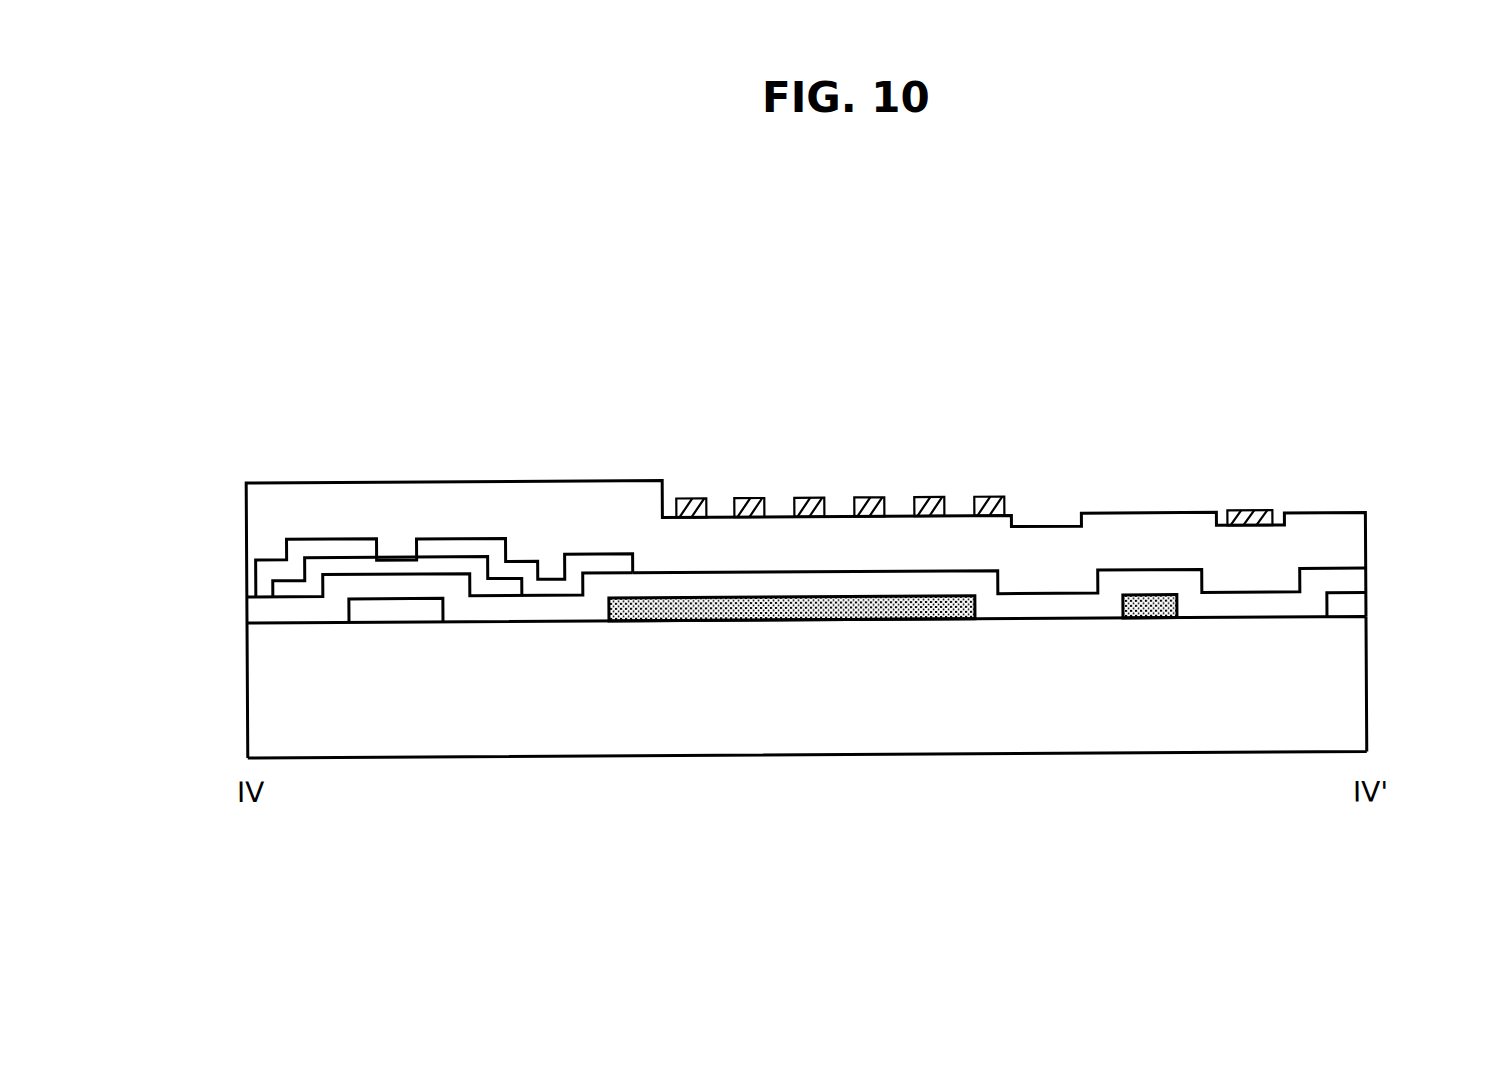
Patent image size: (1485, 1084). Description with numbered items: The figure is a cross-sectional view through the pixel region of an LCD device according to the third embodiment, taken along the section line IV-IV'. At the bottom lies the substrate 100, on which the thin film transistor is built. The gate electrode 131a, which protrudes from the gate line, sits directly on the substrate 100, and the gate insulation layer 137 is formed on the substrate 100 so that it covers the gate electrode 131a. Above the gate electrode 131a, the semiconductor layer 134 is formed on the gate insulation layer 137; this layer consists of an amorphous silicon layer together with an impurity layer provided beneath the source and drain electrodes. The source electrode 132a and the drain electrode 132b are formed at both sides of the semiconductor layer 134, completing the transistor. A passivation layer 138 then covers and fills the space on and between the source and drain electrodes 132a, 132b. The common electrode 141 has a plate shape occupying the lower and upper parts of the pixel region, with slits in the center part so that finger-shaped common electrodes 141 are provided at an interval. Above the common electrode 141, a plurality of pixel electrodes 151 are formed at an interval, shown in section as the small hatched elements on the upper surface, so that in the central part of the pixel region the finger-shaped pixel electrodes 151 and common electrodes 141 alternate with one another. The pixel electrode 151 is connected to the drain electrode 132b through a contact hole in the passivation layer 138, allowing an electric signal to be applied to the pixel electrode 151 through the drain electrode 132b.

The substrate 100 is at (1353, 702).
The gate electrode 131a is at (393, 614).
The source electrode 132a is at (266, 572).
The drain electrode 132b is at (462, 546).
The semiconductor layer 134 is at (282, 590).
The gate insulation layer 137 is at (1352, 588).
The passivation layer 138 is at (1352, 539).
The common electrode 141 is at (787, 626).
The pixel electrode 151 is at (1232, 519).